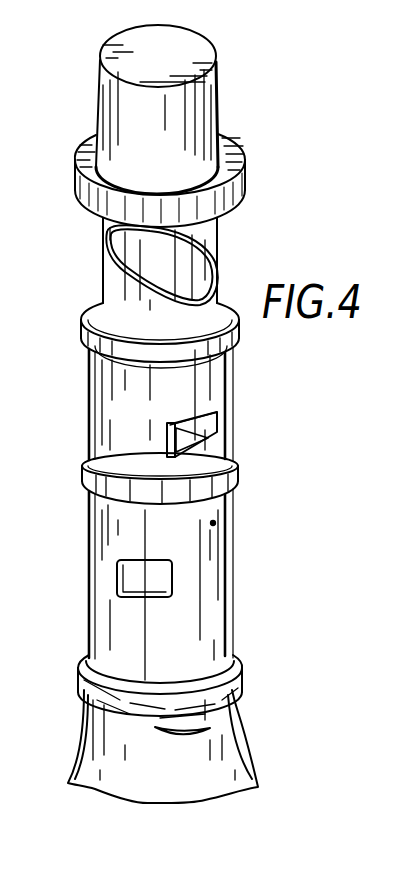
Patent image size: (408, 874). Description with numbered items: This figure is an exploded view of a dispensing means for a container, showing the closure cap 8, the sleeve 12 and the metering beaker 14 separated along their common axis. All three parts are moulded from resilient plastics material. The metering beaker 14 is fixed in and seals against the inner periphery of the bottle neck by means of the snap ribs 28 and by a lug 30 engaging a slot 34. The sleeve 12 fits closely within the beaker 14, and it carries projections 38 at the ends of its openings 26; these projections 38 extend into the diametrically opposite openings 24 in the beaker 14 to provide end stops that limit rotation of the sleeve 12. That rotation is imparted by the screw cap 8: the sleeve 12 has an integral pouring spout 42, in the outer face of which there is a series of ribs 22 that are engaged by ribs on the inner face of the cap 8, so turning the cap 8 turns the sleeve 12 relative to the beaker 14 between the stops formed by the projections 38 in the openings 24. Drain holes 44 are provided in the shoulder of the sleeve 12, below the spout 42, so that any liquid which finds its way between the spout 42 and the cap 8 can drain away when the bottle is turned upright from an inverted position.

The closure cap 8 is at (218, 102).
The pouring spout 42 is at (207, 253).
The ribs 22 is at (102, 318).
The sleeve 12 is at (230, 368).
The drain holes 44 is at (222, 345).
The openings 26 is at (220, 415).
The projections 38 is at (167, 438).
The lug 30 is at (93, 503).
The snap ribs 28 is at (215, 522).
The openings 24 is at (172, 580).
The metering beaker 14 is at (225, 617).
The slot 34 is at (103, 690).